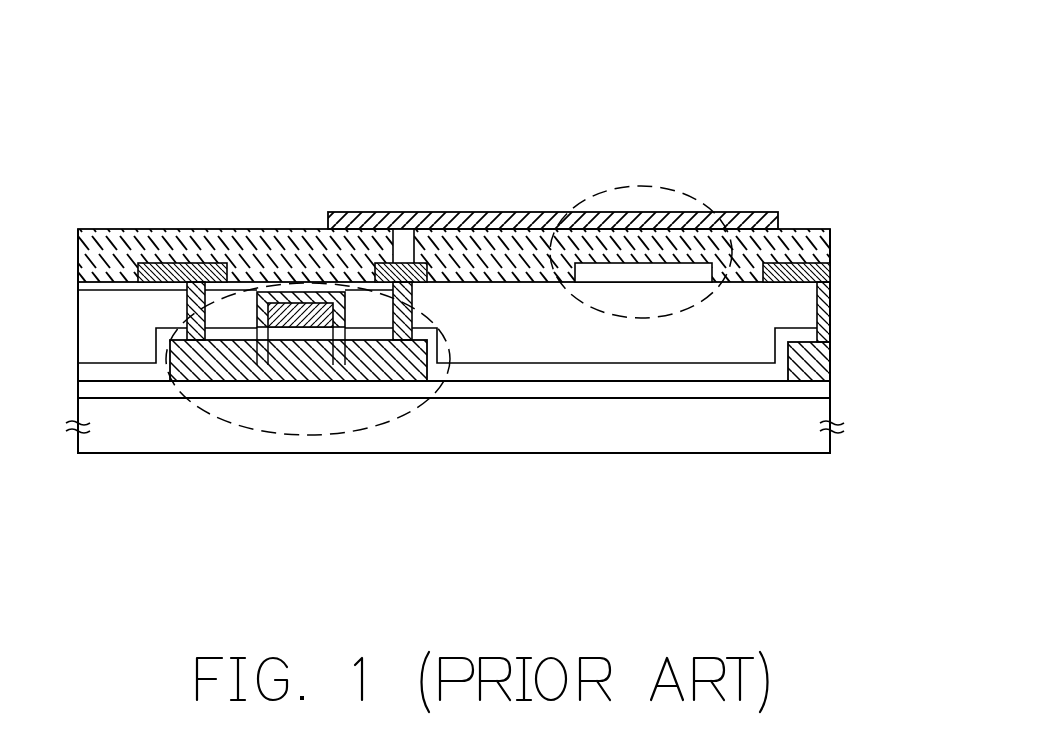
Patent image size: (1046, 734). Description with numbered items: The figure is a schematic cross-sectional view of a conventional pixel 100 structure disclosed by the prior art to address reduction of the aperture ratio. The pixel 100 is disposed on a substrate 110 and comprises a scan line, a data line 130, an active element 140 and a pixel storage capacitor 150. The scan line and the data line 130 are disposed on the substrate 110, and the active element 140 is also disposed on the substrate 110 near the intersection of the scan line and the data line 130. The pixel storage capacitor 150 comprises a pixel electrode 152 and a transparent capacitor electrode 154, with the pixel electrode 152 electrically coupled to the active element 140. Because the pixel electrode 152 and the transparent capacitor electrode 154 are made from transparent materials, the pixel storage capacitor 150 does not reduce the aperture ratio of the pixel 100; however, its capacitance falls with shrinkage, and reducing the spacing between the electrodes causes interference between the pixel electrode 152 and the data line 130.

The pixel 100 is at (920, 488).
The substrate 110 is at (503, 442).
The data line 130 is at (190, 266).
The active element 140 is at (212, 423).
The pixel storage capacitor 150 is at (695, 196).
The pixel electrode 152 is at (628, 222).
The transparent capacitor electrode 154 is at (598, 263).